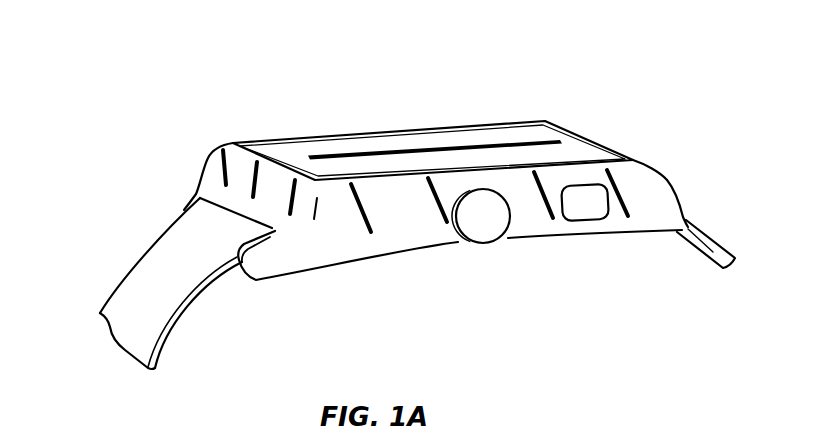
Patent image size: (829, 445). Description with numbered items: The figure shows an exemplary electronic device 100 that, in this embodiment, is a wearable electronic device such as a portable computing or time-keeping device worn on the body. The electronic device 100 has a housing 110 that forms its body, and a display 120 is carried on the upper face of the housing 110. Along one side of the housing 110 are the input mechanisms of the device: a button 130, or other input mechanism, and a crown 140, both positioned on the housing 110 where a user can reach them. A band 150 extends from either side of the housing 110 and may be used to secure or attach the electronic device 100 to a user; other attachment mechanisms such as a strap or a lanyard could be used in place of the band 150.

The electronic device 100 is at (206, 73).
The housing 110 is at (208, 162).
The display 120 is at (563, 152).
The button 130 is at (583, 221).
The crown 140 is at (488, 246).
The band 150 is at (153, 242).